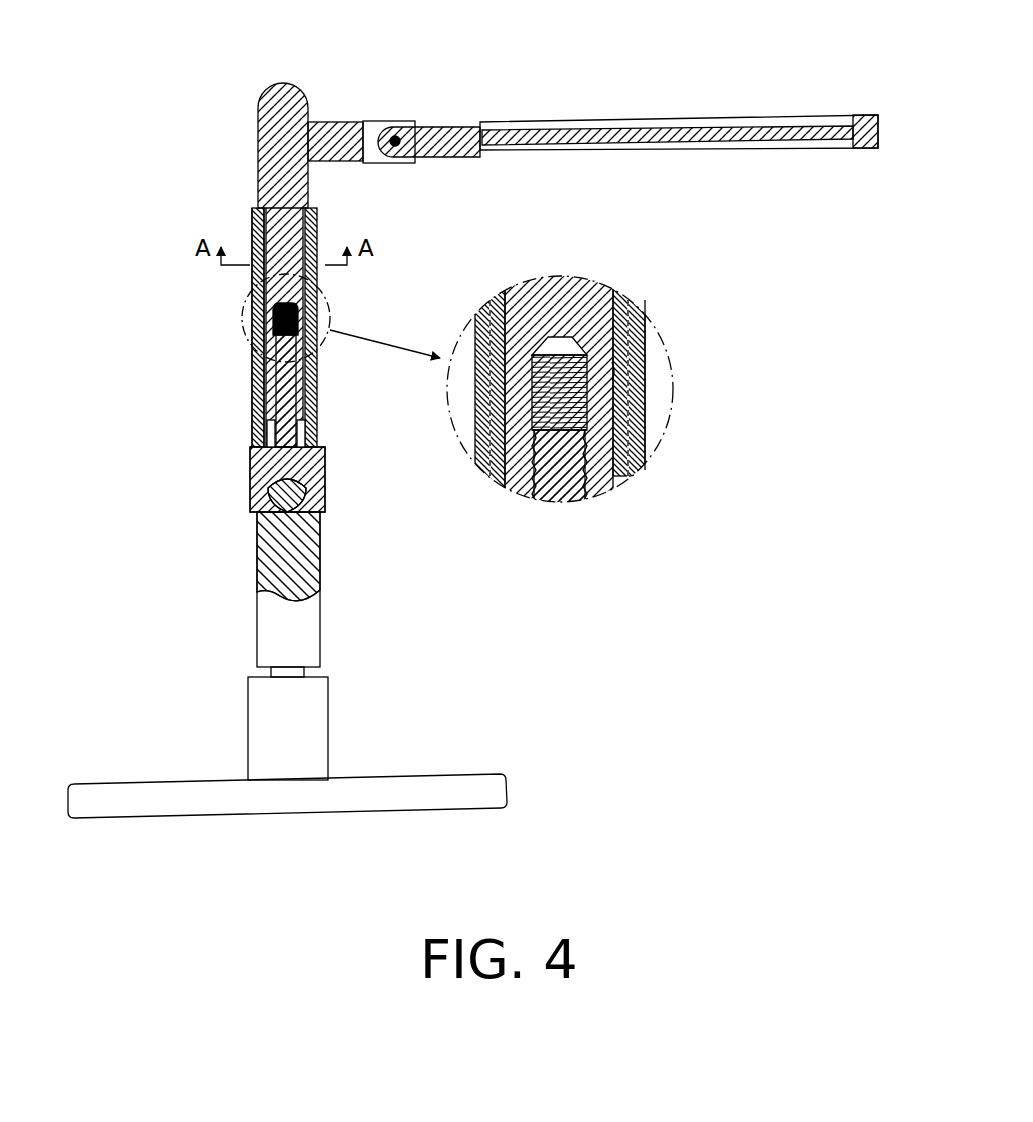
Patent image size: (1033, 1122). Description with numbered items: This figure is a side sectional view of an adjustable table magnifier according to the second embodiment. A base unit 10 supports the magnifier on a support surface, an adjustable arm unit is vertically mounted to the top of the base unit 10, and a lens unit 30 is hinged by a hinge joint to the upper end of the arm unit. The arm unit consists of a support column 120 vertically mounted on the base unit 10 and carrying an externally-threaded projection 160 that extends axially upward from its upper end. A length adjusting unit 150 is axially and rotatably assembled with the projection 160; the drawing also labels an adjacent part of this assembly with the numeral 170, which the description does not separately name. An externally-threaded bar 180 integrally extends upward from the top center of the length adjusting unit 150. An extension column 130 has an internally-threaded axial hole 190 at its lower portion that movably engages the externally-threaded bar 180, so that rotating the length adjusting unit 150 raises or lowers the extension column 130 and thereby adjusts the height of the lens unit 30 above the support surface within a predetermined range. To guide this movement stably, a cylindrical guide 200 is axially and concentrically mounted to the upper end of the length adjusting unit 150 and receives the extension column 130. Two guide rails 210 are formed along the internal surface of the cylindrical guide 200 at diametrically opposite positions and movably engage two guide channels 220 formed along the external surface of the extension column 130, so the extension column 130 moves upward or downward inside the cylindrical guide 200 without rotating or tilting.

The base unit 10 is at (452, 783).
The lens unit 30 is at (633, 122).
The support column 120 is at (305, 634).
The extension column 130 is at (278, 148).
The length adjusting unit 150 is at (326, 486).
The externally-threaded projection 160 is at (262, 500).
The coupler 170 is at (258, 480).
The externally-threaded bar 180 is at (303, 378).
The internally-threaded axial hole 190 is at (258, 322).
The cylindrical guide 200 is at (251, 386).
The guide rails 210 is at (268, 205).
The guide channels 220 is at (612, 370).